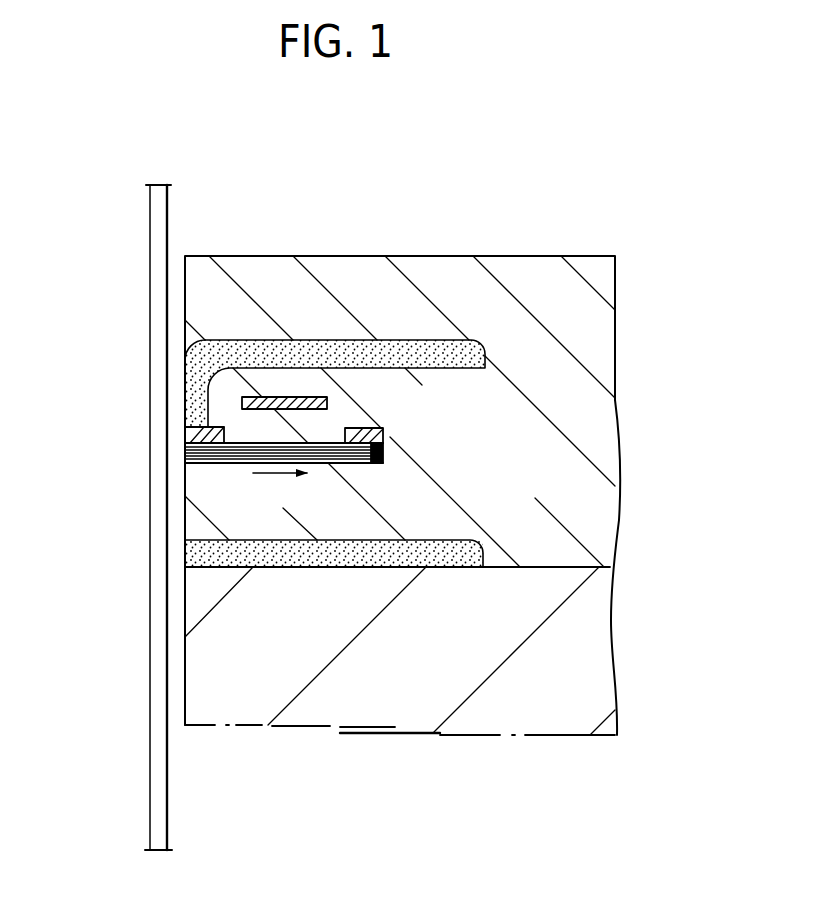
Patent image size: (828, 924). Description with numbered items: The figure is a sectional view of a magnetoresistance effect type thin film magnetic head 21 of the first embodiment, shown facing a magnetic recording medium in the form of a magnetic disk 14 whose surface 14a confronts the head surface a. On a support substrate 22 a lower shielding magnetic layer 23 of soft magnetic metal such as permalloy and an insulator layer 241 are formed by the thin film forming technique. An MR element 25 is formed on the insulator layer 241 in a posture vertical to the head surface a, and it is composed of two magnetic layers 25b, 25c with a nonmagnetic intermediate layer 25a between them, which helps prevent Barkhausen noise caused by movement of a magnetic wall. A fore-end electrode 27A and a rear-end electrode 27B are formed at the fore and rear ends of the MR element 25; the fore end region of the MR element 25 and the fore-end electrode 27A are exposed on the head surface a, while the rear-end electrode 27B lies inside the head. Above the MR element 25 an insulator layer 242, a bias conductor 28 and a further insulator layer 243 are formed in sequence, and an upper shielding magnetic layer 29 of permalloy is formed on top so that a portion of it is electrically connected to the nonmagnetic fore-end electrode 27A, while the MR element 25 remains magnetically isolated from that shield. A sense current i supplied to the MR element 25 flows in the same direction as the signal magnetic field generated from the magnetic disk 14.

The magnetic disk 14 is at (166, 517).
The surface of magnetic disk 14a is at (168, 810).
The magnetoresistance effect type thin film magnetic head 21 is at (286, 181).
The support substrate 22 is at (603, 691).
The lower shielding magnetic layer 23 is at (400, 637).
The insulator layer 241 is at (287, 507).
The insulator layer 242 is at (263, 420).
The insulator layer 243 is at (327, 385).
The MR element 25 is at (370, 479).
The nonmagnetic intermediate layer 25a is at (377, 463).
The magnetic layer 25b is at (385, 438).
The magnetic layer 25c is at (353, 462).
The fore-end electrode 27A is at (188, 432).
The rear-end electrode 27B is at (362, 426).
The bias conductor 28 is at (297, 397).
The upper shielding magnetic layer 29 is at (457, 357).
The head surface a is at (174, 390).
The sense current i is at (280, 487).